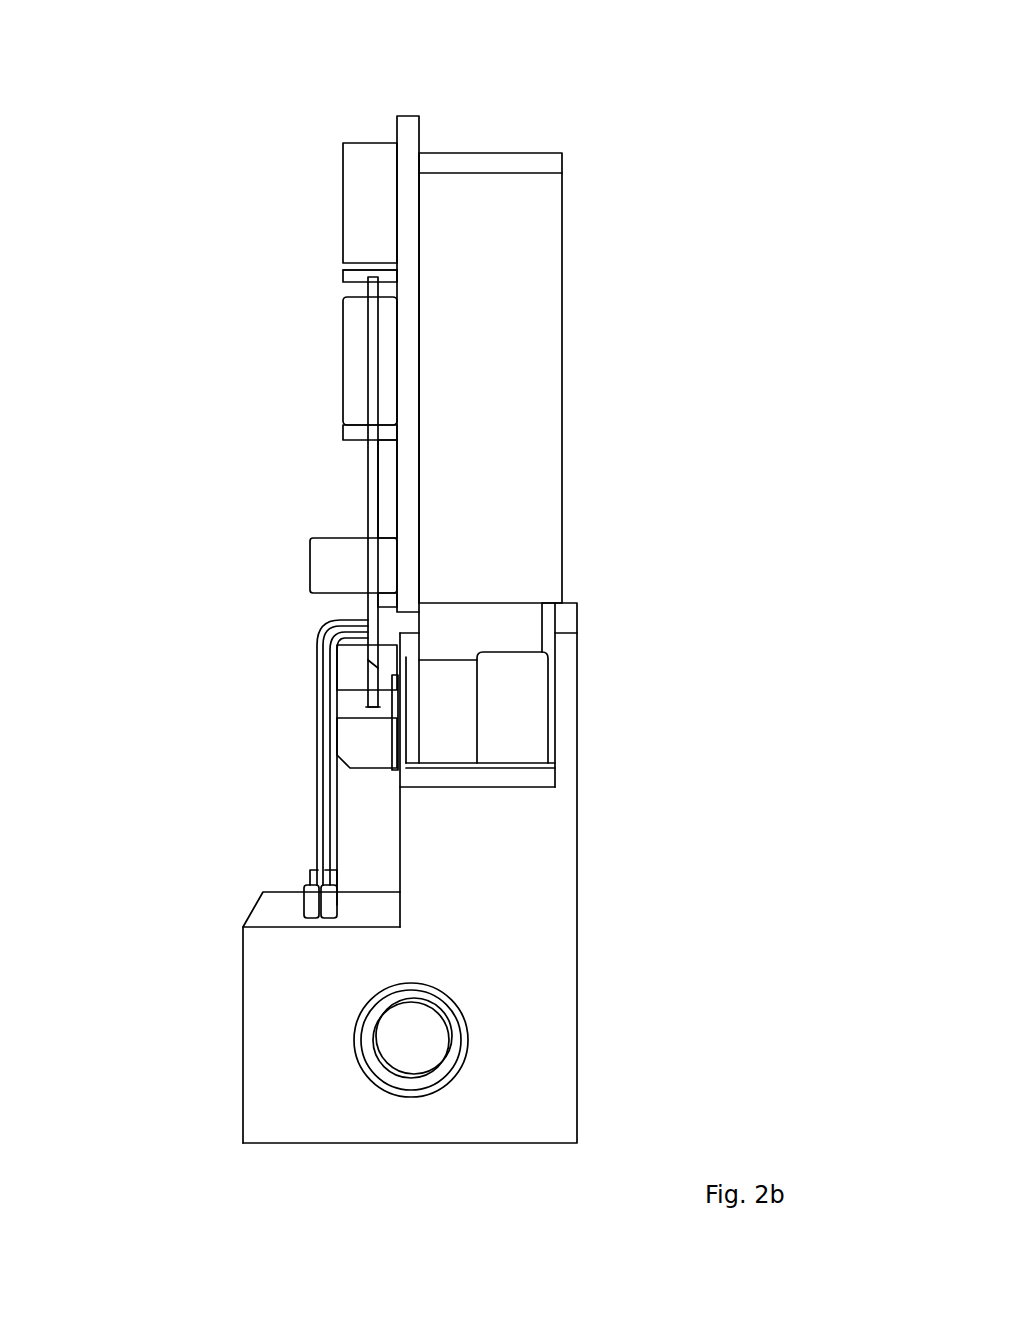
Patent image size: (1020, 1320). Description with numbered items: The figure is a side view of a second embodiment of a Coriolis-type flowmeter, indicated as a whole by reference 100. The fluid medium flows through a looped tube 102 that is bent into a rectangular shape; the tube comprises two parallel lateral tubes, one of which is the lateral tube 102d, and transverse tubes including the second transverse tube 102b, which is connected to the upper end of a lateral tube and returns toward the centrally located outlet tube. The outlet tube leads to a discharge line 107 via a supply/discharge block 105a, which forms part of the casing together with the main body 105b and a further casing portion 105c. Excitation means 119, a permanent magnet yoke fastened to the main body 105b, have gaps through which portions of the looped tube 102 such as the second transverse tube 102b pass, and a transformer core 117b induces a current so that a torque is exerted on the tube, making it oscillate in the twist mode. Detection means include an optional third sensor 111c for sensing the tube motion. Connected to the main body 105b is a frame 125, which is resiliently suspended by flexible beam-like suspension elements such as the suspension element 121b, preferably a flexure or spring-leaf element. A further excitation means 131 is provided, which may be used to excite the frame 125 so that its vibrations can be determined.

The sample processing system 100 is at (648, 93).
The supply/discharge block 105a is at (267, 993).
The main body of the casing 105b is at (403, 178).
The side housing portion 105c is at (560, 818).
The discharge line 107 is at (423, 1042).
The excitation means 119 is at (367, 192).
The looped tube 102 is at (372, 480).
The second transverse tube 102b is at (367, 285).
The lateral tube 102d is at (362, 618).
The transformer core 117b is at (333, 565).
The third sensor 111c is at (350, 745).
The suspension element 121b is at (397, 733).
The frame 125 is at (412, 668).
The further excitation means 131 is at (497, 690).